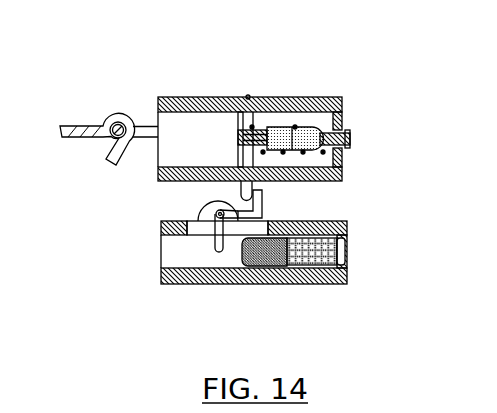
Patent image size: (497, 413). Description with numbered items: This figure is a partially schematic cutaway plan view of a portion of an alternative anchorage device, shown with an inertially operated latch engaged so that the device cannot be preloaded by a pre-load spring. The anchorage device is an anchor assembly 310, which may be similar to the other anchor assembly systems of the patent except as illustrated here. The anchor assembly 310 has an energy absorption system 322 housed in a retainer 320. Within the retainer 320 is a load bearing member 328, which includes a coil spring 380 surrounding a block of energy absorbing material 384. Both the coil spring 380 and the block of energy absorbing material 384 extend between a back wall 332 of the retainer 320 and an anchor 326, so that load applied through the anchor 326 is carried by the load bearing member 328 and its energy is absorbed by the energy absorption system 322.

The anchor assembly 310 is at (74, 97).
The retainer 320 is at (160, 97).
The energy absorption system 322 is at (295, 101).
The anchor 326 is at (138, 125).
The load bearing member 328 is at (270, 118).
The back wall 332 is at (342, 170).
The coil spring 380 is at (313, 126).
The block of energy absorbing material 384 is at (298, 127).